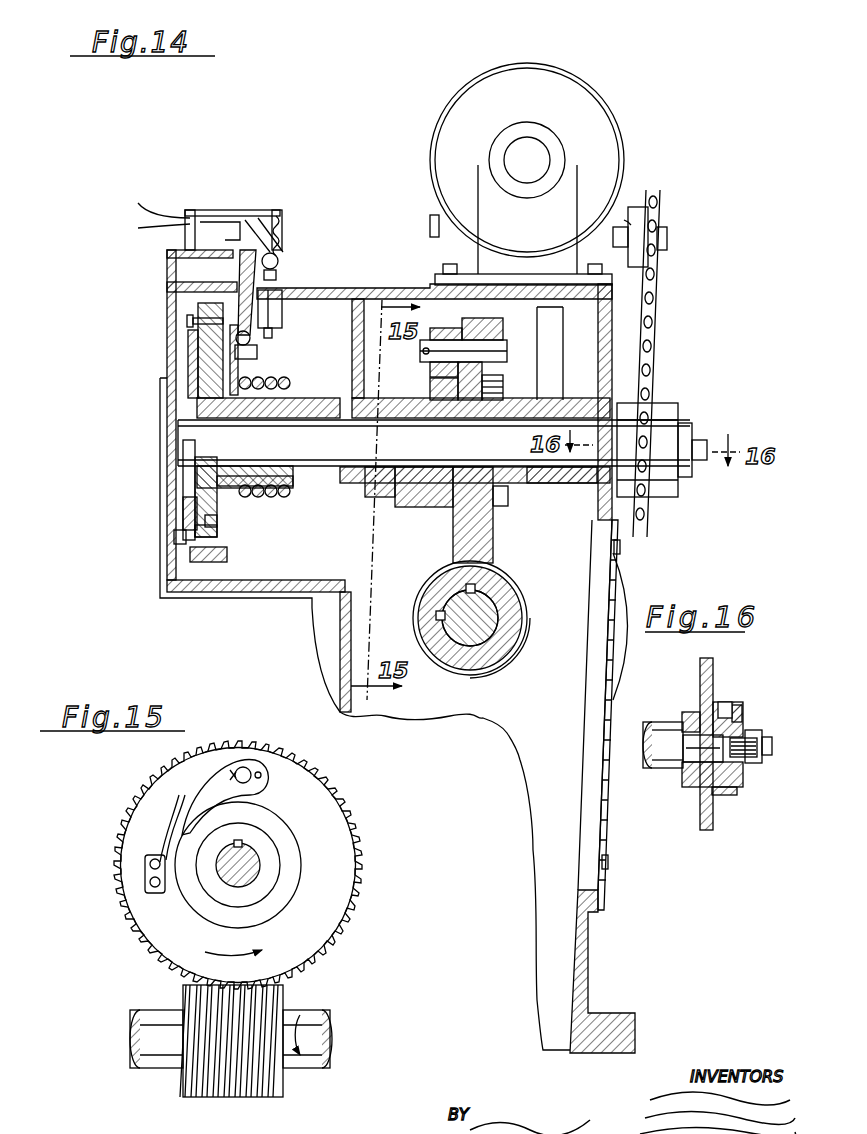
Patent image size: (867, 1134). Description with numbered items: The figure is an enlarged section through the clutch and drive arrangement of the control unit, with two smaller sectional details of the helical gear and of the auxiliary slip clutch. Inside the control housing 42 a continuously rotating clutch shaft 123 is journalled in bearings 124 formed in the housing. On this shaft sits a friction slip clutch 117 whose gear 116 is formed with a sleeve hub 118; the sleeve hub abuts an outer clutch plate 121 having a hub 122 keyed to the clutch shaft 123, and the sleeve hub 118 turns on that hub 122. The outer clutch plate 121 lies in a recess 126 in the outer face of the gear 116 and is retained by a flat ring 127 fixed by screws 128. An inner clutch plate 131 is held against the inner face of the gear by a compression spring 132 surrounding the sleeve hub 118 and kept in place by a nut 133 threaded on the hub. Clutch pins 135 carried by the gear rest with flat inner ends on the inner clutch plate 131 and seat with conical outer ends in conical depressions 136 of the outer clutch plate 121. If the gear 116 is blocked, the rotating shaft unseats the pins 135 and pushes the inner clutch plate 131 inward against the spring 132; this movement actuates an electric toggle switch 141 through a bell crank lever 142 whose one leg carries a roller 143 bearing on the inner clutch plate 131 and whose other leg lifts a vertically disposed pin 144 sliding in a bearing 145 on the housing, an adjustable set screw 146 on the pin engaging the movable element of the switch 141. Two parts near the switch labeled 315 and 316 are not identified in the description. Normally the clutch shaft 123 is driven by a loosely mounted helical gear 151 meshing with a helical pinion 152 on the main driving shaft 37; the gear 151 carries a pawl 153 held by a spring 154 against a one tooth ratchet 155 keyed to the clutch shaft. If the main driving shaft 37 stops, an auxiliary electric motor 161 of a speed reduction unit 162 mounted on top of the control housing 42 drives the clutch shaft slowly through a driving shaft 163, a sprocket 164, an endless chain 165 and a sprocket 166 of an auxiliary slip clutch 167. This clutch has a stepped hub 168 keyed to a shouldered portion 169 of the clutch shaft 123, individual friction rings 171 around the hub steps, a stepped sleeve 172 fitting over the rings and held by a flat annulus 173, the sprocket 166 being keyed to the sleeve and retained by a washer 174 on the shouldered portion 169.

In FIG. 14, the main driving shaft 37 is at (488, 632).
In FIG. 15, the main driving shaft 37 is at (318, 1030).
In FIG. 14, the control housing 42 is at (585, 962).
In FIG. 14, the gear 116 is at (205, 562).
In FIG. 14, the friction slip clutch 117 is at (186, 480).
In FIG. 14, the sleeve hub 118 is at (262, 455).
In FIG. 14, the outer clutch plate 121 is at (205, 473).
In FIG. 14, the hub 122 is at (226, 452).
In FIG. 14, the clutch shaft 123 is at (434, 443).
In FIG. 15, the clutch shaft 123 is at (252, 862).
In FIG. 16, the clutch shaft 123 is at (662, 735).
In FIG. 14, the bearings 124 is at (368, 478).
In FIG. 14, the recess 126 is at (197, 528).
In FIG. 14, the flat ring 127 is at (186, 500).
In FIG. 14, the screws 128 is at (176, 537).
In FIG. 14, the inner clutch plate 131 is at (213, 515).
In FIG. 14, the compression spring 132 is at (273, 498).
In FIG. 14, the nut 133 is at (292, 482).
In FIG. 14, the clutch pins 135 is at (212, 365).
In FIG. 14, the conical depressions 136 is at (200, 376).
In FIG. 14, the electric toggle switch 141 is at (249, 206).
In FIG. 14, the bell crank lever 142 is at (262, 350).
In FIG. 14, the roller 143 is at (257, 356).
In FIG. 14, the pin 144 is at (273, 340).
In FIG. 14, the bearing 145 is at (288, 313).
In FIG. 14, the adjustable set screw 146 is at (283, 275).
In FIG. 14, the helical gear 151 is at (490, 543).
In FIG. 15, the helical gear 151 is at (335, 820).
In FIG. 14, the helical pinion 152 is at (513, 593).
In FIG. 15, the helical pinion 152 is at (268, 1000).
In FIG. 14, the pawl 153 is at (430, 366).
In FIG. 15, the pawl 153 is at (205, 785).
In FIG. 15, the spring 154 is at (168, 828).
In FIG. 14, the one tooth ratchet 155 is at (430, 507).
In FIG. 15, the one tooth ratchet 155 is at (292, 884).
In FIG. 14, the auxiliary electric motor 161 is at (592, 118).
In FIG. 14, the speed reduction unit 162 is at (437, 210).
In FIG. 14, the driving shaft 163 is at (628, 225).
In FIG. 14, the sprocket 164 is at (658, 222).
In FIG. 14, the endless chain 165 is at (657, 307).
In FIG. 14, the sprocket 166 is at (650, 430).
In FIG. 16, the sprocket 166 is at (700, 668).
In FIG. 14, the auxiliary slip clutch 167 is at (700, 427).
In FIG. 16, the auxiliary slip clutch 167 is at (722, 683).
In FIG. 16, the stepped hub 168 is at (752, 733).
In FIG. 16, the shouldered portion 169 is at (740, 760).
In FIG. 16, the friction rings 171 is at (692, 712).
In FIG. 16, the stepped sleeve 172 is at (724, 702).
In FIG. 16, the flat annulus 173 is at (742, 720).
In FIG. 16, the washer 174 is at (690, 766).
In FIG. 14, the lever arm 315 is at (142, 202).
In FIG. 14, the lever arm 316 is at (141, 229).